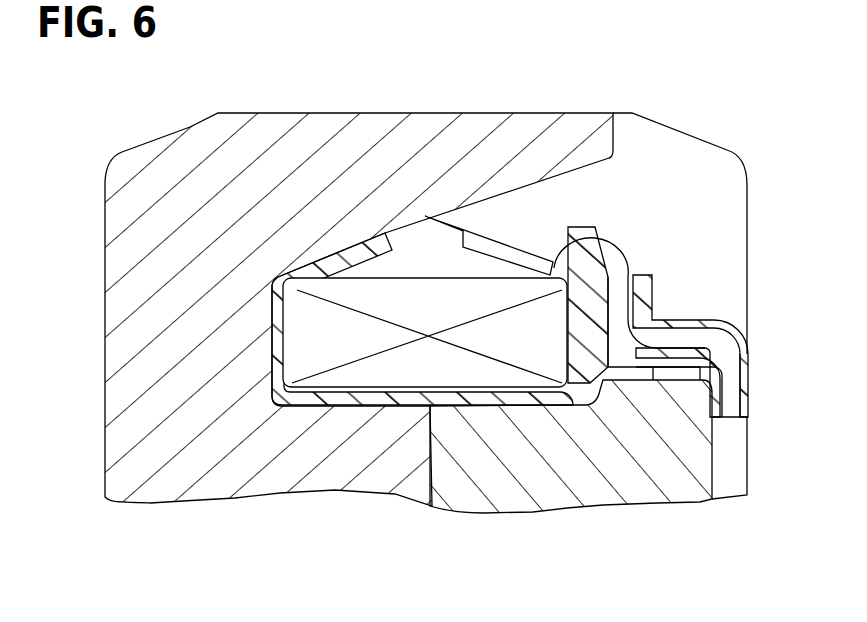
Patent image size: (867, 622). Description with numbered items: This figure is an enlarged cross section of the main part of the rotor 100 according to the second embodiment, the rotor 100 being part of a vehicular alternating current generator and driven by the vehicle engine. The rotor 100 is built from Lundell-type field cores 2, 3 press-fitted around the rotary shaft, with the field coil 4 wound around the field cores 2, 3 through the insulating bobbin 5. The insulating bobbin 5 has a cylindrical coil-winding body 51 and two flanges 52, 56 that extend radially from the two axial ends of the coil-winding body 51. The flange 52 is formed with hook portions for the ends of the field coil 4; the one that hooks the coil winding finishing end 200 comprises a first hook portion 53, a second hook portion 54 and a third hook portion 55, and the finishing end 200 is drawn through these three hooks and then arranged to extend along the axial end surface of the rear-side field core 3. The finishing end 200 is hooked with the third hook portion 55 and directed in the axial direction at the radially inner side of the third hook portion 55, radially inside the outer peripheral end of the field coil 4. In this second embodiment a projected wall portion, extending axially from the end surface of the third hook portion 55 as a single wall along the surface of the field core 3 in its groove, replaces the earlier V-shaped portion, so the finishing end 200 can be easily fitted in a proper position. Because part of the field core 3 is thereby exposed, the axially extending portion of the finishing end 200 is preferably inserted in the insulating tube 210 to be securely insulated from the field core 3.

The field core 2 is at (265, 130).
The field core 3 is at (627, 492).
The field coil 4 is at (435, 300).
The insulating bobbin 5 is at (386, 412).
The coil-winding body 51 is at (483, 398).
The flange 52 is at (573, 404).
The first hook portion 53 is at (586, 227).
The second hook portion 54 is at (627, 275).
The third hook portion 55 is at (648, 318).
The flange 56 is at (268, 365).
The rotor 100 is at (502, 58).
The coil winding finishing end 200 is at (707, 338).
The insulating tube 210 is at (742, 418).